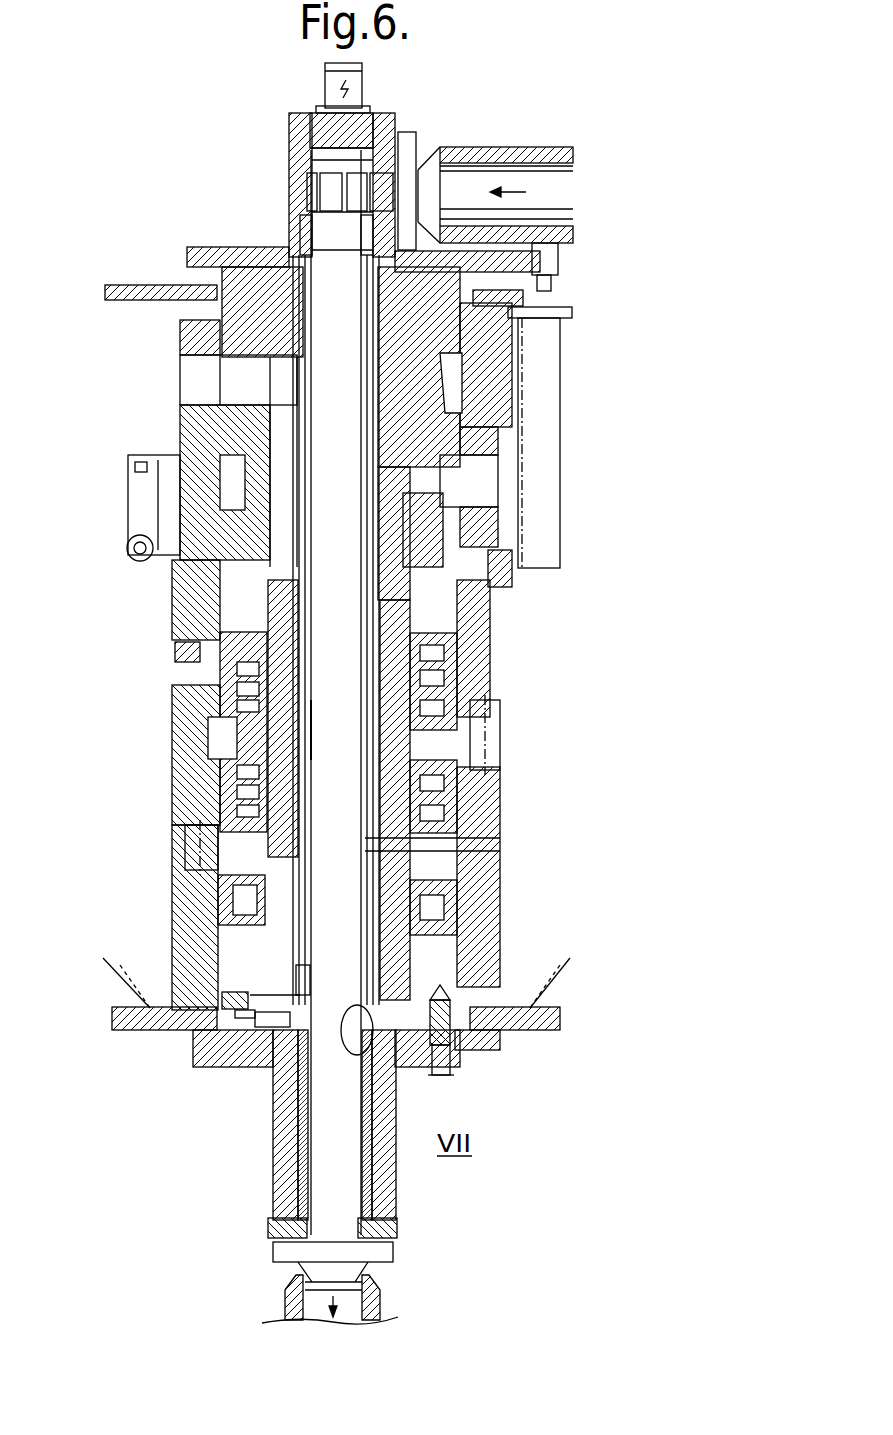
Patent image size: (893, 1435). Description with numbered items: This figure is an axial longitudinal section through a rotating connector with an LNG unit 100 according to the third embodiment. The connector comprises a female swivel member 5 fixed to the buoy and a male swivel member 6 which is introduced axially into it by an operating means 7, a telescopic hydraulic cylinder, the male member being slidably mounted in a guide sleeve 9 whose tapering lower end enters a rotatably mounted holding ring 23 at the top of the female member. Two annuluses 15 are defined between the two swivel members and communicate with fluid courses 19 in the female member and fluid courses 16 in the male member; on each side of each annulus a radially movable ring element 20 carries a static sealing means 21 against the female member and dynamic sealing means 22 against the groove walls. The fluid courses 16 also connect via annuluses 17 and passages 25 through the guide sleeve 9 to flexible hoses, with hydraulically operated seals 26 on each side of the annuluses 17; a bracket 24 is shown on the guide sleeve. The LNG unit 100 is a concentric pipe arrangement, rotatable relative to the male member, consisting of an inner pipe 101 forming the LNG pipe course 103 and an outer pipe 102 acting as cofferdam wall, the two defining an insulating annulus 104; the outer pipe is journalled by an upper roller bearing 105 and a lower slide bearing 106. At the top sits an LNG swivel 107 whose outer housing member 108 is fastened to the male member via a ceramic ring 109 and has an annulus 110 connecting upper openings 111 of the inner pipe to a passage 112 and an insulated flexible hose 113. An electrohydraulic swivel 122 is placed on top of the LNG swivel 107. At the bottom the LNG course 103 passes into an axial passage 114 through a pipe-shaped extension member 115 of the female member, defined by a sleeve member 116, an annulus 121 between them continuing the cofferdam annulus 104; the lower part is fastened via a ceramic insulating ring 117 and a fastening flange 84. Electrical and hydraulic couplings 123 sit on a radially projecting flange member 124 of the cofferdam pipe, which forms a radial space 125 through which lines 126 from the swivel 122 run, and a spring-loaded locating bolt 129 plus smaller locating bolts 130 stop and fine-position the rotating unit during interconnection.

The female swivel member 5 is at (480, 925).
The male swivel member 6 is at (430, 418).
The operating means 7 is at (537, 483).
The guide sleeve 9 is at (195, 445).
The annuluses 15 is at (220, 740).
The fluid courses 16 is at (392, 620).
The annuluses 17 is at (455, 385).
The fluid courses 19 is at (198, 845).
The ring element 20 is at (432, 905).
The static sealing means 21 is at (228, 897).
The dynamic sealing means 22 is at (440, 810).
The holding ring 23 is at (172, 606).
The sensor bracket 24 is at (130, 512).
The passages 25 is at (195, 378).
The hydraulically operated seals 26 is at (480, 435).
The fastening flange 84 is at (540, 1025).
The LNG unit 100 is at (292, 678).
The inner pipe 101 is at (365, 840).
The outer pipe 102 is at (365, 851).
The pipe course 103 is at (354, 798).
The insulating annulus 104 is at (308, 704).
The upper roller bearing 105 is at (293, 252).
The lower slide bearing 106 is at (298, 985).
The LNG swivel 107 is at (283, 204).
The outer housing member 108 is at (300, 142).
The ceramic ring 109 is at (272, 257).
The annulus 110 is at (305, 185).
The upper openings 111 is at (355, 183).
The passage 112 is at (388, 187).
The insulated flexible hose 113 is at (513, 153).
The axially directed passage 114 is at (345, 1190).
The pipe-shaped extension member 115 is at (285, 1135).
The sleeve member 116 is at (302, 1175).
The ceramic insulating ring 117 is at (197, 1045).
The annulus 121 is at (368, 1165).
The electrohydraulic swivel 122 is at (324, 81).
The electrical and hydraulic couplings 123 is at (265, 1025).
The flange member 124 is at (240, 1015).
The radially projecting space 125 is at (422, 1005).
The lines 126 is at (262, 1000).
The locating bolt 129 is at (488, 1050).
The smaller locating bolts 130 is at (437, 1058).